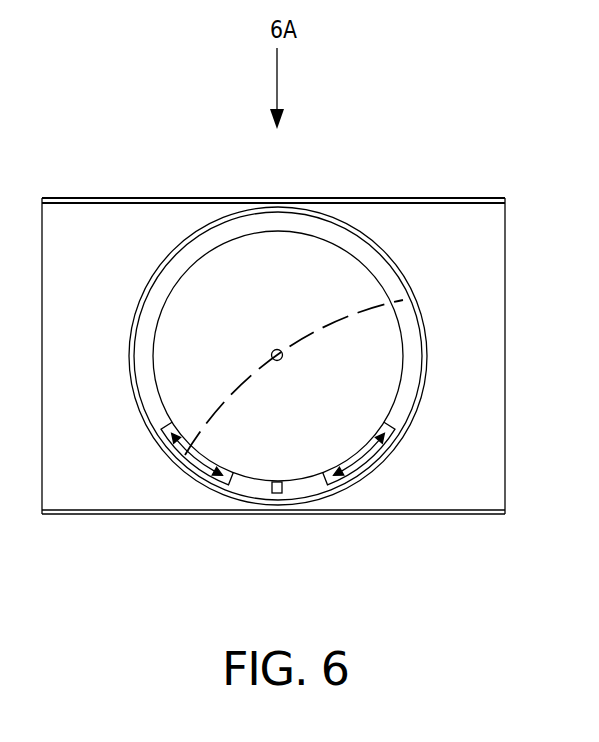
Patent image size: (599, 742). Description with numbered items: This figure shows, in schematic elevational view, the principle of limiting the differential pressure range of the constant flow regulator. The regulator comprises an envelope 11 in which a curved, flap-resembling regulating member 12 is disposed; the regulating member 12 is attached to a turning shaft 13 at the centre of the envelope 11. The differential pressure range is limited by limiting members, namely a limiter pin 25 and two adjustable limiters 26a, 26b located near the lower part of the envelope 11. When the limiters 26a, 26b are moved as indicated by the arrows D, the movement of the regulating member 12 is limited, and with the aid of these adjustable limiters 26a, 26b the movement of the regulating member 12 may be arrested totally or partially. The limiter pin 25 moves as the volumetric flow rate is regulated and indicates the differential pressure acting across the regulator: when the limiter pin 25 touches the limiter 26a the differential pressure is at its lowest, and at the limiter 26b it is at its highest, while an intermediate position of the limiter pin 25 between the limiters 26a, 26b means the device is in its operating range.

The envelope 11 is at (426, 197).
The regulating member 12 is at (328, 315).
The turning shaft 13 is at (275, 363).
The limiter pin 25 is at (282, 489).
The limiter 26a is at (217, 481).
The limiter 26b is at (343, 481).
The arrows D is at (176, 466).